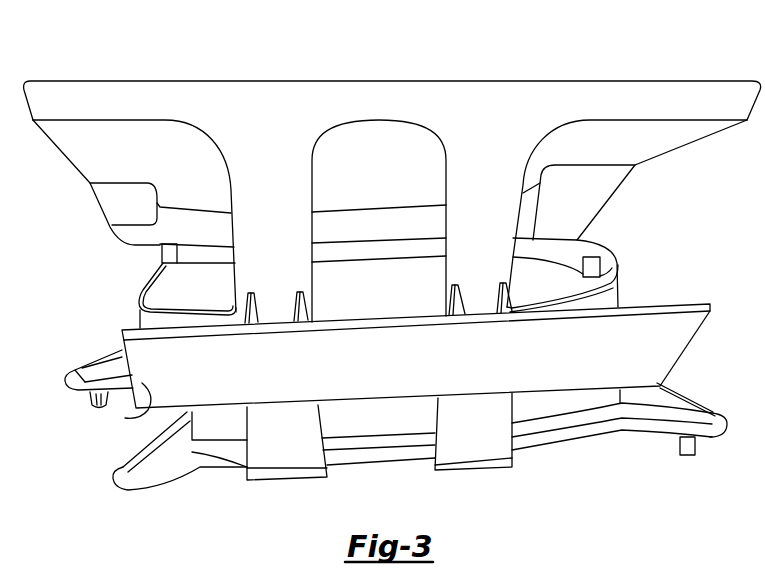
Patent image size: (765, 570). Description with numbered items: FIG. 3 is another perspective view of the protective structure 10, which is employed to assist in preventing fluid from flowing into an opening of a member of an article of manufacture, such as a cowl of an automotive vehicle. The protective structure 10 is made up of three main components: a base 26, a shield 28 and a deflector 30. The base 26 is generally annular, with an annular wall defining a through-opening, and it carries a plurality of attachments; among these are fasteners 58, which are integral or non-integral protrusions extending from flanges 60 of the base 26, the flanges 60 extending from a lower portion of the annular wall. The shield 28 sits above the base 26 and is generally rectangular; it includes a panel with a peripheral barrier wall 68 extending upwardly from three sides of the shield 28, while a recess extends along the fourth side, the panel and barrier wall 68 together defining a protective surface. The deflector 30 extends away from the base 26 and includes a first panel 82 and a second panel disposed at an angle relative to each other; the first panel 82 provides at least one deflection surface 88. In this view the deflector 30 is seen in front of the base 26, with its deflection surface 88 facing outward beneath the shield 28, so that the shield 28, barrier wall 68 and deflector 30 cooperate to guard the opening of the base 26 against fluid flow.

The protective structure 10 is at (557, 56).
The peripheral barrier wall 68 is at (150, 98).
The shield 28 is at (638, 93).
The base 26 is at (612, 259).
The deflection surface 88 is at (387, 380).
The deflector 30 is at (137, 410).
The first panel 82 is at (560, 380).
The flanges 60 is at (718, 412).
The fasteners 58 is at (683, 456).